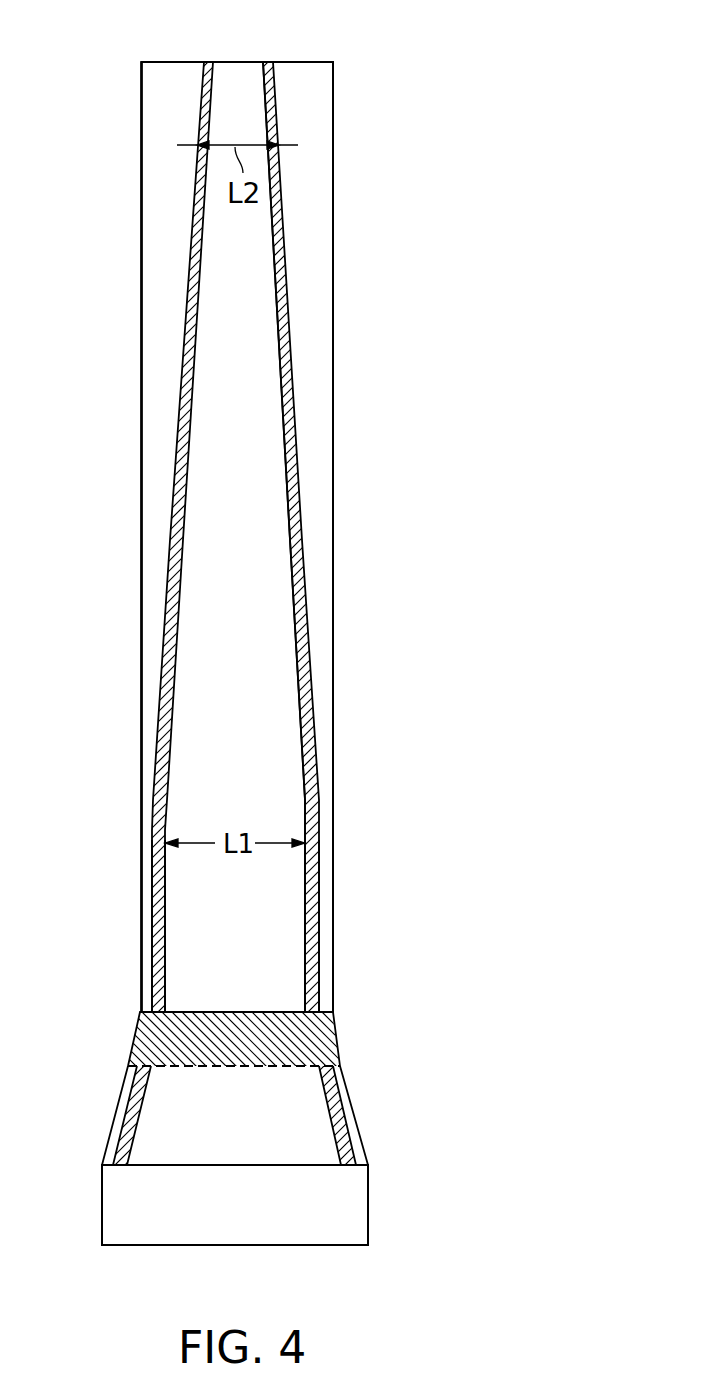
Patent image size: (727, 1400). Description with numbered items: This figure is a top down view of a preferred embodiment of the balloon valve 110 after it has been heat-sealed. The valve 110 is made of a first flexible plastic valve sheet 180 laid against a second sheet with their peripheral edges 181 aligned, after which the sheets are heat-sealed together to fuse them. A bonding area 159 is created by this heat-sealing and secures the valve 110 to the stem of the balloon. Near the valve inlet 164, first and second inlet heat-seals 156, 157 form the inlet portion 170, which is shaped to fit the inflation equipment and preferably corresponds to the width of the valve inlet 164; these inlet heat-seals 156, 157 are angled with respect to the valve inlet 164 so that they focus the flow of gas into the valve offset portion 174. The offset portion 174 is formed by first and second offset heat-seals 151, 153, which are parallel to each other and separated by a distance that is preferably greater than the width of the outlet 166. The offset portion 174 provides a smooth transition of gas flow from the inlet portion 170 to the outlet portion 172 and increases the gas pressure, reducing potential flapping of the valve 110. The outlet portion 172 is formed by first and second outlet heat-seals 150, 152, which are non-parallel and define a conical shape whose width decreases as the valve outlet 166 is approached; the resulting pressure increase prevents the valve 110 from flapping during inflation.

The valve 110 is at (427, 315).
The first outlet heat-seal 150 is at (297, 580).
The first offset heat-seal 151 is at (315, 940).
The second outlet heat-seal 152 is at (173, 580).
The second offset heat-seal 153 is at (157, 938).
The first inlet heat-seal 156 is at (333, 1097).
The second inlet heat-seal 157 is at (137, 1093).
The bonding area 159 is at (340, 1043).
The valve inlet 164 is at (232, 1245).
The valve outlet 166 is at (240, 62).
The inlet portion 170 is at (322, 1137).
The outlet portion 172 is at (267, 355).
The valve offset portion 174 is at (295, 857).
The first flexible plastic valve sheet 180 is at (245, 537).
The peripheral edges 181 is at (333, 218).